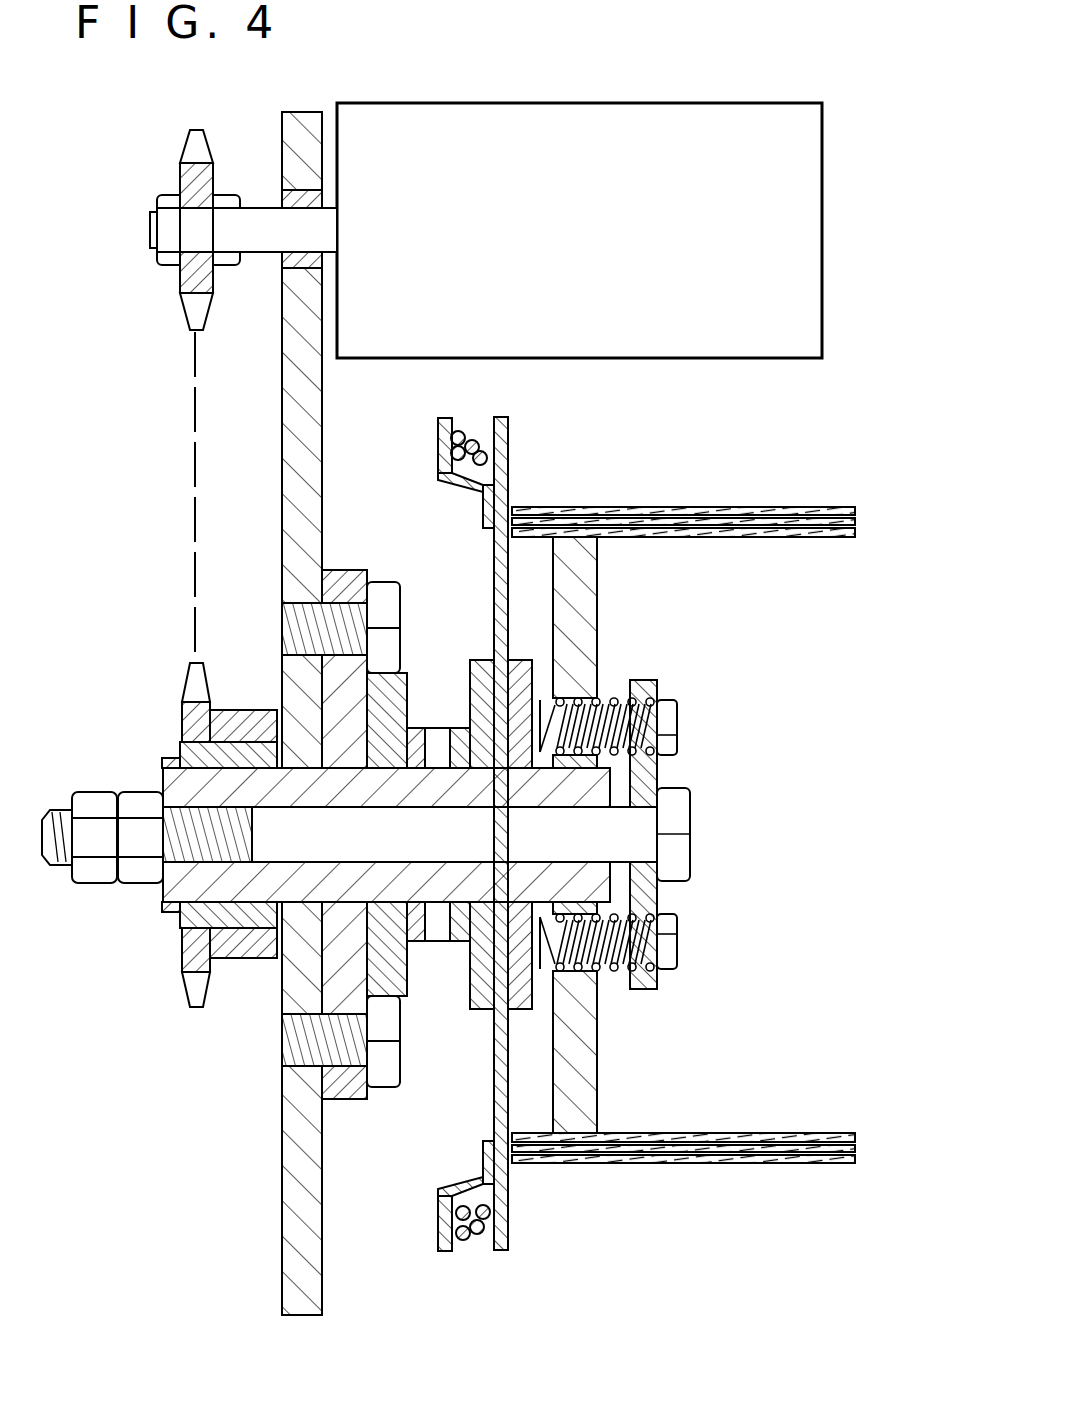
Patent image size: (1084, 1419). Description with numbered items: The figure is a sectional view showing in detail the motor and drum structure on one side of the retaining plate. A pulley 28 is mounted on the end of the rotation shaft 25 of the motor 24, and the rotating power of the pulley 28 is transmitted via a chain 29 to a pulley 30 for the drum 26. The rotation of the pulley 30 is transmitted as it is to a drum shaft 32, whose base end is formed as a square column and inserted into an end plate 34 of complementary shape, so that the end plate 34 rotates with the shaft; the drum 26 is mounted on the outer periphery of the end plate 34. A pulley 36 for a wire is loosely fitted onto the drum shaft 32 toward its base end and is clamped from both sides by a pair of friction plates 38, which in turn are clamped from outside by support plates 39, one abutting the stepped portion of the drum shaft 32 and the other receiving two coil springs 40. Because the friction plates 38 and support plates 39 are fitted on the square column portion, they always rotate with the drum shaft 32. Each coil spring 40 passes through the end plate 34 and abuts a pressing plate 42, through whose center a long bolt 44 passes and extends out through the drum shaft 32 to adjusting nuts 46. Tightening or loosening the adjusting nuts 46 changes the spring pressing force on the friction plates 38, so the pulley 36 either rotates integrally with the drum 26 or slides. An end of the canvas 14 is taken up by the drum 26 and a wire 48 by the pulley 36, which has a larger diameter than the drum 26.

The canvas 14 is at (662, 1163).
The motor 24 is at (480, 103).
The rotation shaft 25 is at (258, 208).
The drum 26 is at (726, 1133).
The pulley 28 is at (182, 189).
The chain 29 is at (195, 426).
The pulley 30 is at (182, 708).
The drum shaft 32 is at (163, 893).
The end plate 34 is at (598, 650).
The pulley 36 is at (493, 562).
The friction plates 38 is at (478, 662).
The support plates 39 is at (470, 992).
The coil springs 40 is at (610, 700).
The pressing plate 42 is at (657, 912).
The bolt 44 is at (682, 853).
The adjusting nuts 46 is at (92, 795).
The wire 48 is at (460, 432).